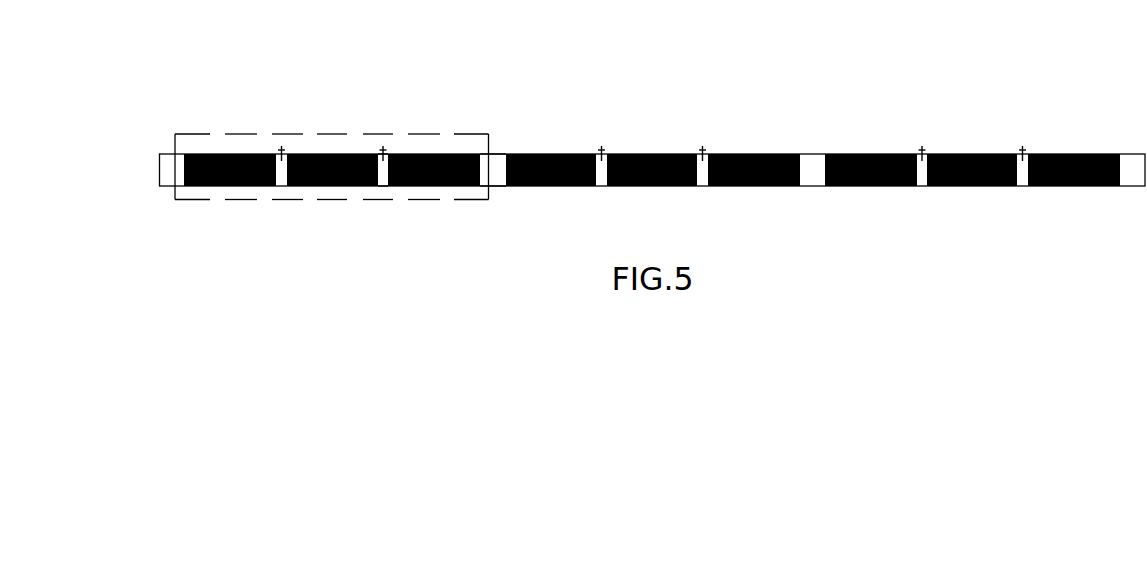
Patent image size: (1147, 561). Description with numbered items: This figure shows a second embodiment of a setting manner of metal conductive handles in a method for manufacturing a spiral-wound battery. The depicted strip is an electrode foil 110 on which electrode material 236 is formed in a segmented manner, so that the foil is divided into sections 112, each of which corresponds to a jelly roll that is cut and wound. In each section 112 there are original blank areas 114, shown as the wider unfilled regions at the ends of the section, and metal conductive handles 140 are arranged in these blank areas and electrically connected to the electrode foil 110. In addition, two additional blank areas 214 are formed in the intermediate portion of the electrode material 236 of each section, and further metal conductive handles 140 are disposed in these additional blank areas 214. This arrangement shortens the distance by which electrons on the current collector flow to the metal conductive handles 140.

The electrode foil 110 is at (653, 142).
The section 112 is at (330, 134).
The blank area 114 is at (489, 183).
The metal conductive handle 140 is at (383, 152).
The additional blank area 214 is at (380, 186).
The electrode material 236 is at (325, 186).